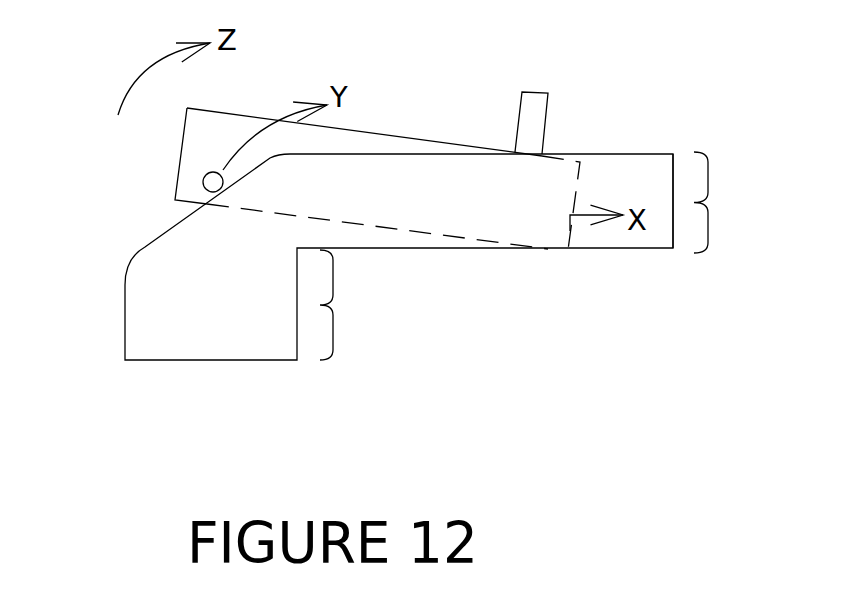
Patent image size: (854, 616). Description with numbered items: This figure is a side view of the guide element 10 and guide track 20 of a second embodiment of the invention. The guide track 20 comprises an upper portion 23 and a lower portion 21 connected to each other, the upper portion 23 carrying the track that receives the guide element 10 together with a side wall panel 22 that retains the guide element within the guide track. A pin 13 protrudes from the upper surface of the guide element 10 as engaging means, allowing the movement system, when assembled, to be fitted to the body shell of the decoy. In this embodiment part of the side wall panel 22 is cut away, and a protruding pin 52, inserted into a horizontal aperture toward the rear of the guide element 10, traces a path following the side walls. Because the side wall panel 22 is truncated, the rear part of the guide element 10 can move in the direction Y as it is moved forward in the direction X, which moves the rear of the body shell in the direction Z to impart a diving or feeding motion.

The guide element 10 is at (215, 135).
The pin 13 is at (528, 107).
The guide track 20 is at (224, 332).
The lower portion 21 is at (351, 305).
The side wall panel 22 is at (650, 170).
The upper portion 23 is at (729, 202).
The pin 52 is at (203, 182).